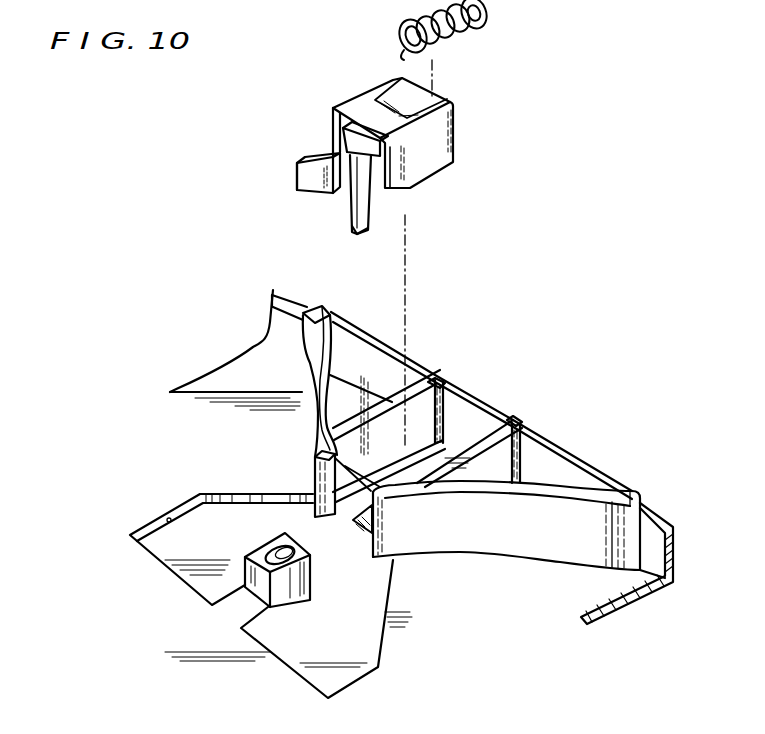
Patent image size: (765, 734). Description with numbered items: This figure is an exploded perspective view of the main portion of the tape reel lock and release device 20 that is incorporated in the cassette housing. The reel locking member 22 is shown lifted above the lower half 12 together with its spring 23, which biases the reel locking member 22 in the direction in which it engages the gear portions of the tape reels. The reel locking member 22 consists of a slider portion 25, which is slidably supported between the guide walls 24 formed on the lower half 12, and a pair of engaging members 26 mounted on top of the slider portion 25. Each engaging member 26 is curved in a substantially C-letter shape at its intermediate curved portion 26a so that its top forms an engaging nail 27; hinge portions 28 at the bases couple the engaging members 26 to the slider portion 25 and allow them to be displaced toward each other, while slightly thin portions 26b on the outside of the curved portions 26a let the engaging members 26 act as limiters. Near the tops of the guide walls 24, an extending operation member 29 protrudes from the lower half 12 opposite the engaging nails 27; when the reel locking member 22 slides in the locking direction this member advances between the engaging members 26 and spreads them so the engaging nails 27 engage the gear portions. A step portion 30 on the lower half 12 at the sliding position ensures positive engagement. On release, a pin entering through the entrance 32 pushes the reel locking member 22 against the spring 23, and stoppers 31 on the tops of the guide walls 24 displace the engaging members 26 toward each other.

The lower half 12 is at (659, 525).
The tape reel lock and release device 20 is at (385, 146).
The reel locking member 22 is at (455, 112).
The spring 23 is at (488, 12).
The guide walls 24 is at (390, 430).
The slider portion 25 is at (448, 142).
The engaging members 26 is at (306, 146).
The curved portions 26a is at (318, 185).
The thin portions 26b is at (330, 157).
The engaging nails 27 is at (297, 178).
The hinge portions 28 is at (382, 150).
The extending operation member 29 is at (260, 555).
The step portion 30 is at (172, 513).
The stoppers 31 is at (327, 478).
The entrance 32 is at (368, 533).